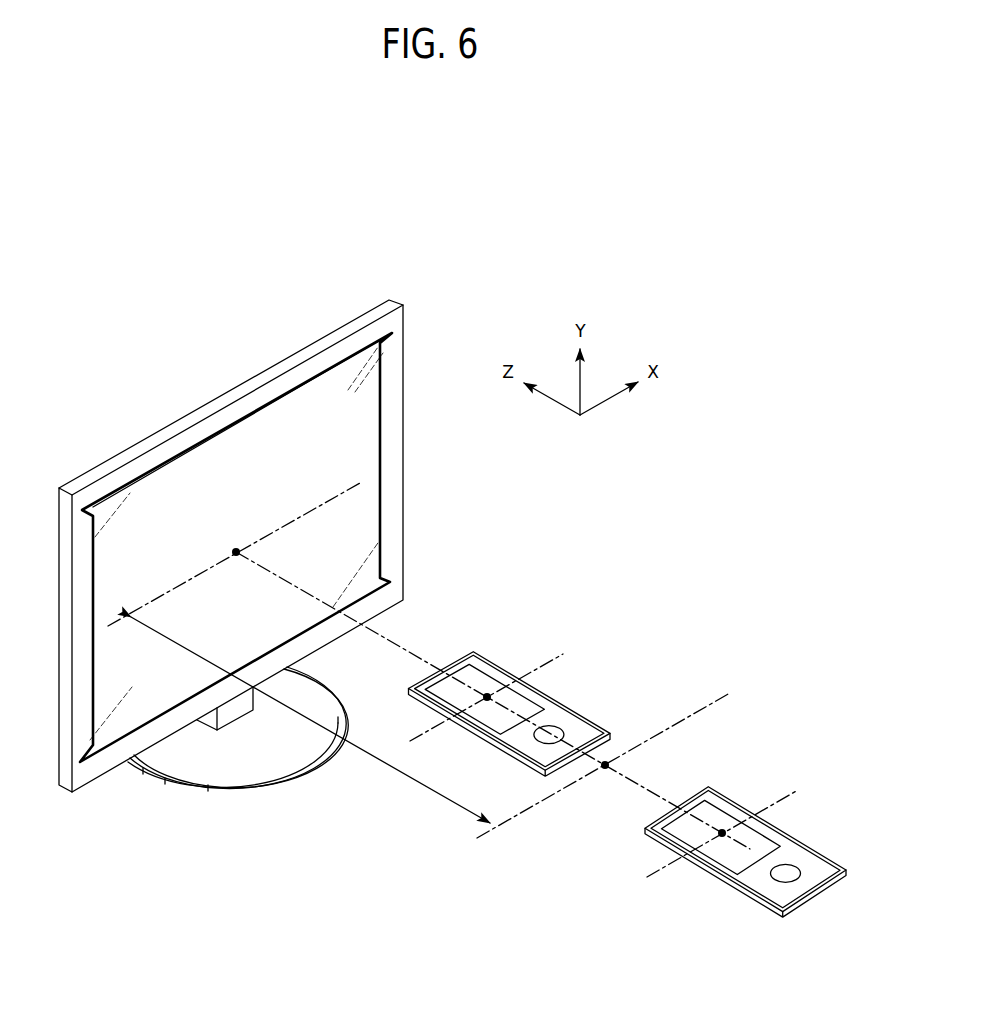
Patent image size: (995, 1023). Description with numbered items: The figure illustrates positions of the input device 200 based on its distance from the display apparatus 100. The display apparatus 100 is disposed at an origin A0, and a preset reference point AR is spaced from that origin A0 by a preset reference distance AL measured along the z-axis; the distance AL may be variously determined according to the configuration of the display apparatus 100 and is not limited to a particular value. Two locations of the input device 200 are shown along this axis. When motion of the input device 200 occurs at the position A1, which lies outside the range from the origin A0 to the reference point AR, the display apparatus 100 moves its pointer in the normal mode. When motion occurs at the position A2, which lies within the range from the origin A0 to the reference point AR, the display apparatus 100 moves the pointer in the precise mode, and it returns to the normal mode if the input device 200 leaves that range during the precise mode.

The display apparatus 100 is at (404, 292).
The input device 200 is at (586, 711).
The origin A0 is at (235, 549).
The position of input device out of range A1 is at (724, 830).
The position of input device within range A2 is at (489, 694).
The reference point AR is at (604, 770).
The reference distance AL is at (310, 720).